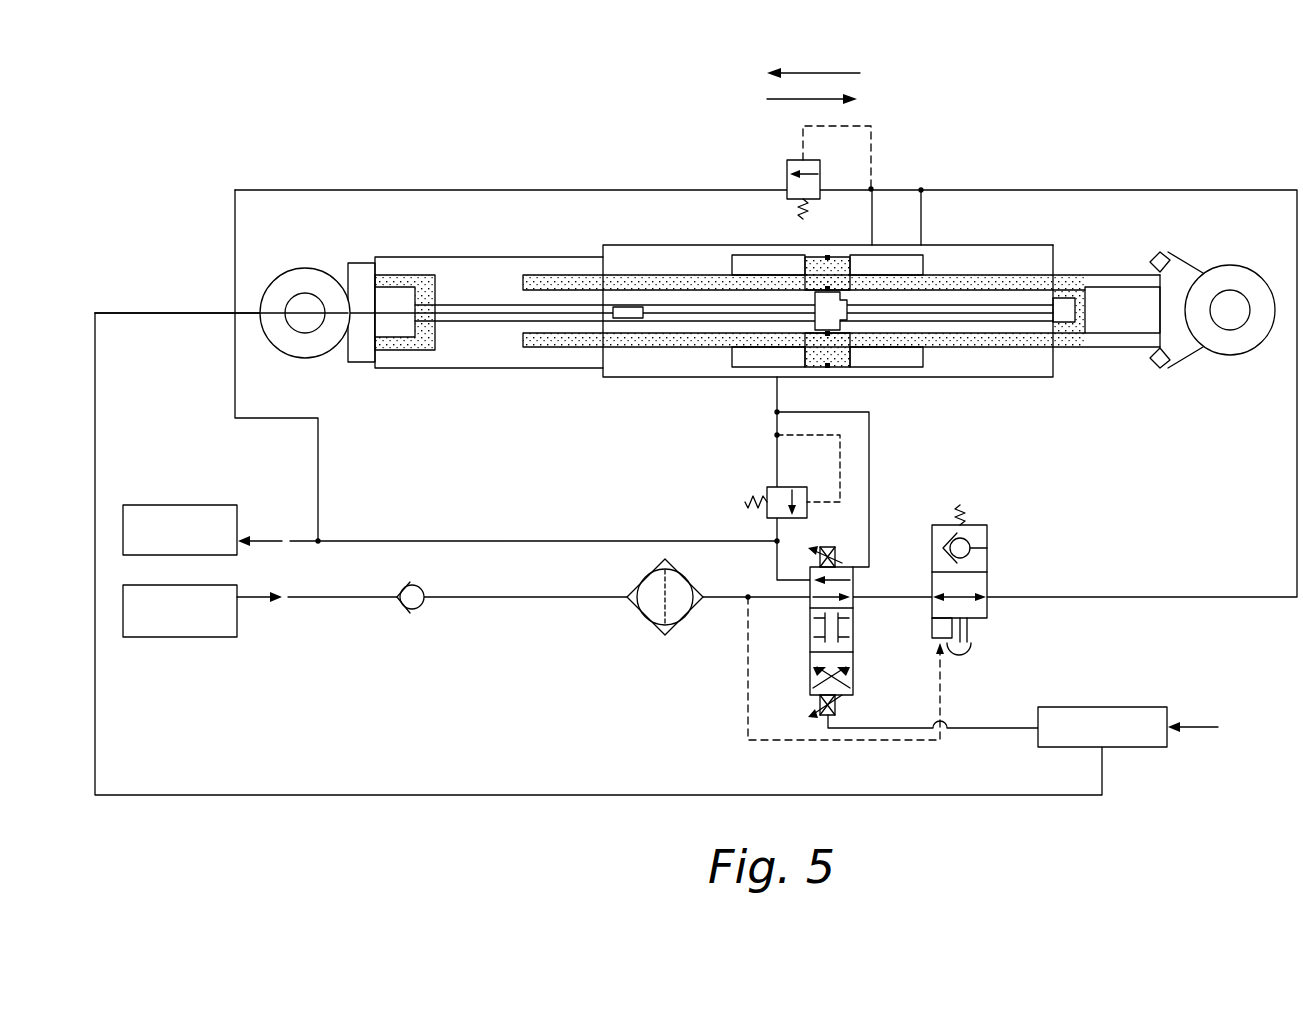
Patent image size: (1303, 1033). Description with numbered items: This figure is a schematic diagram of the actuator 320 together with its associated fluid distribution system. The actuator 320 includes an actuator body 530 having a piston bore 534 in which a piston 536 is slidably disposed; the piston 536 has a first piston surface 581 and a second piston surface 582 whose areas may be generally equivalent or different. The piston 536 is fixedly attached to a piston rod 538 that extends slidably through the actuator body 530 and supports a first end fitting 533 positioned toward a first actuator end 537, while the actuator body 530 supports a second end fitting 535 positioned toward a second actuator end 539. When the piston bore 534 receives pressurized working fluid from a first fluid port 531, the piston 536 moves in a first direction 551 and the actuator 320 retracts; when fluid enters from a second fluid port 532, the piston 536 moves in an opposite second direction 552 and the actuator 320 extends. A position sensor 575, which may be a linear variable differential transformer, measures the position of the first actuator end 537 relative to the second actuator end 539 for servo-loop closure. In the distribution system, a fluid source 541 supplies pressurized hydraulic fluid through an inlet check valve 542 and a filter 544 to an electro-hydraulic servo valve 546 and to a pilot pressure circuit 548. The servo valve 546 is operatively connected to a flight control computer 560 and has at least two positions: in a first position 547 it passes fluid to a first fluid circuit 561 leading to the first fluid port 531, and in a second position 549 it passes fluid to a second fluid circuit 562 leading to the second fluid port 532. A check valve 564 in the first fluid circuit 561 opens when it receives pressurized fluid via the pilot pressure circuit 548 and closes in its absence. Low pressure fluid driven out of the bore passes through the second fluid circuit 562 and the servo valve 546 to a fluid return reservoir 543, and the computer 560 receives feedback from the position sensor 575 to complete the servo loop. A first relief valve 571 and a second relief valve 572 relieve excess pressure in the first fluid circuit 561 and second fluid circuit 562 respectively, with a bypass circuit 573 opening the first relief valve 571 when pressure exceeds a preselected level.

The actuator 320 is at (1003, 245).
The actuator body 530 is at (622, 378).
The first fluid port 531 is at (927, 247).
The second fluid port 532 is at (775, 378).
The first end fitting 533 is at (1230, 265).
The piston bore 534 is at (747, 258).
The second end fitting 535 is at (305, 268).
The piston 536 is at (898, 247).
The first actuator end 537 is at (1207, 378).
The piston rod 538 is at (1018, 348).
The second actuator end 539 is at (270, 365).
The fluid source 541 is at (185, 637).
The inlet check valve 542 is at (415, 612).
The fluid return reservoir 543 is at (180, 505).
The filter 544 is at (652, 622).
The electro-hydraulic servo valve 546 is at (810, 670).
The first position symbol 547 is at (855, 570).
The pilot pressure circuit 548 is at (775, 745).
The second position symbol 549 is at (860, 652).
The first direction 551 is at (853, 74).
The second direction 552 is at (780, 99).
The flight control computer 560 is at (1135, 747).
The first fluid circuit 561 is at (1010, 190).
The second fluid circuit 562 is at (780, 387).
The check valve 564 is at (987, 537).
The first relief valve 571 is at (787, 168).
The second relief valve 572 is at (777, 487).
The bypass circuit 573 is at (871, 150).
The position sensor 575 is at (628, 305).
The first piston surface 581 is at (853, 268).
The second piston surface 582 is at (797, 262).